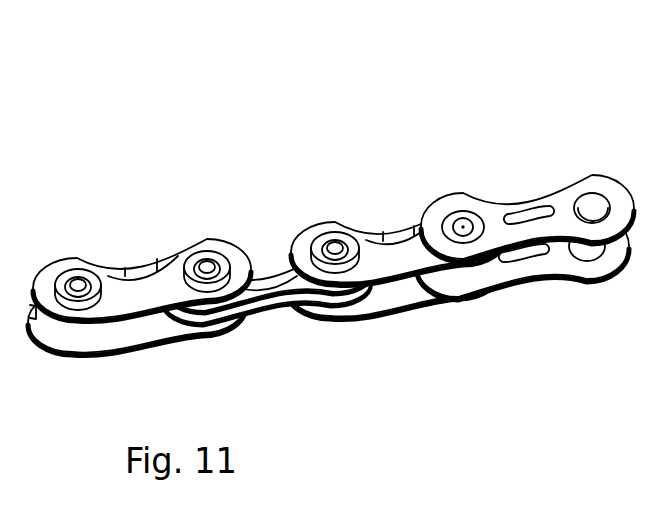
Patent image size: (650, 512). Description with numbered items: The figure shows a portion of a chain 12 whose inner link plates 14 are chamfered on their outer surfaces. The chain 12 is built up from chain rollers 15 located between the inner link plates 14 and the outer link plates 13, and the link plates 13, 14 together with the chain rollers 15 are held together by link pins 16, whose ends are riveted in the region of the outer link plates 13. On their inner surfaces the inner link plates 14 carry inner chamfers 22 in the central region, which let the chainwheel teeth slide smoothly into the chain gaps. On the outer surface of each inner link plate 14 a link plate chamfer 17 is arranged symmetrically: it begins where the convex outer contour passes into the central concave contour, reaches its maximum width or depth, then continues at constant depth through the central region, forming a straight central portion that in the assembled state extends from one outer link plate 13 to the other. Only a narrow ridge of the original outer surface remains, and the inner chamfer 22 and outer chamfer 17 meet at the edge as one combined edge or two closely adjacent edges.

The chain 12 is at (484, 186).
The outer link plates 13 is at (562, 195).
The inner link plates 14 is at (393, 222).
The chain rollers 15 is at (52, 332).
The link pins 16 is at (207, 262).
The link plate chamfer 17 is at (373, 232).
The inner chamfer 22 is at (417, 280).